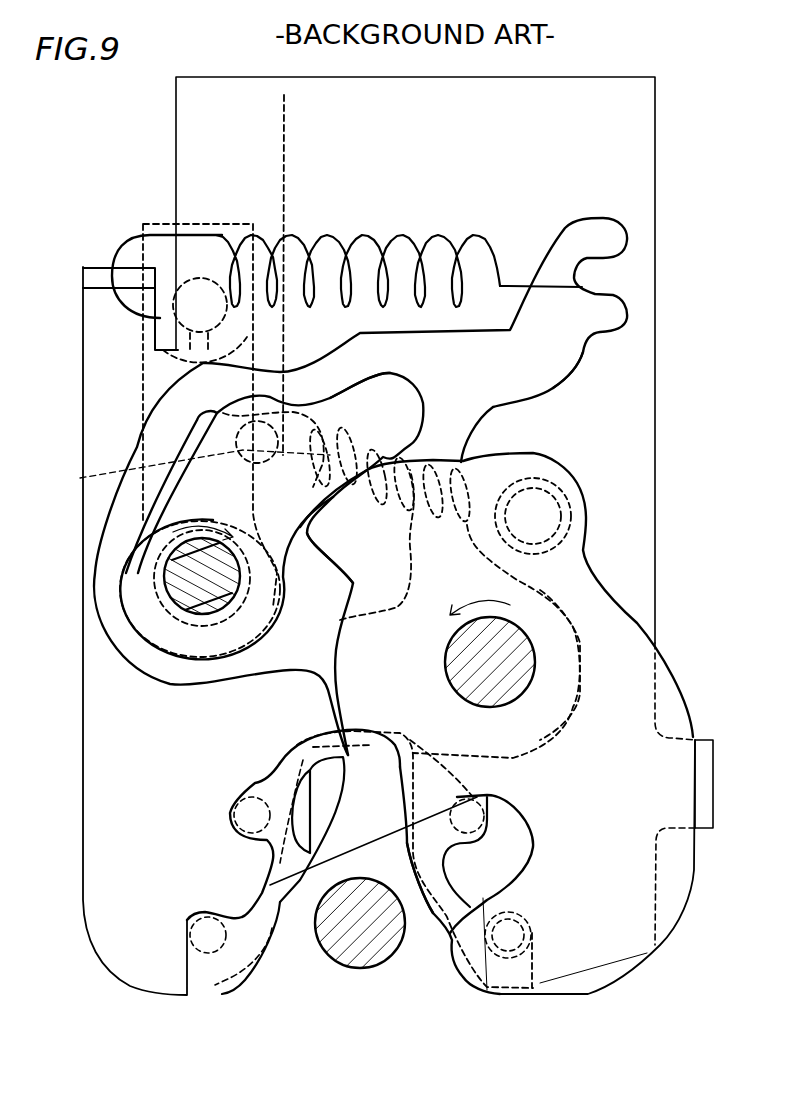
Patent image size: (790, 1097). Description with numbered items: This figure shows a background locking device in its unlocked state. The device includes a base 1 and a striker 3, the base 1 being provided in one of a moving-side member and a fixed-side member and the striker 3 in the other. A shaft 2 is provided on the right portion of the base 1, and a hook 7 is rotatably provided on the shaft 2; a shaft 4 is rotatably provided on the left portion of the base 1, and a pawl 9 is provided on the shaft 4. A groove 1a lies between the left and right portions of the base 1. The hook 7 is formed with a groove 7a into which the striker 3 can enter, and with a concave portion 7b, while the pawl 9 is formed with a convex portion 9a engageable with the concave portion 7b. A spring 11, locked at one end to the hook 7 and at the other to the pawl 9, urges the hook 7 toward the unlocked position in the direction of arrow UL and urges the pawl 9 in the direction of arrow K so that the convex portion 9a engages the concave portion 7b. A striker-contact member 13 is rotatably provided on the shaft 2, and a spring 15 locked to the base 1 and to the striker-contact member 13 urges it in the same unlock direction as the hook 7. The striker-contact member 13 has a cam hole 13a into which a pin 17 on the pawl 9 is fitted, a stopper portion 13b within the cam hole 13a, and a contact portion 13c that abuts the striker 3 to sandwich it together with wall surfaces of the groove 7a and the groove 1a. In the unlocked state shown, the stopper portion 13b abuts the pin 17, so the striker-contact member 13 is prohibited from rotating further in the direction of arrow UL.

The base 1 is at (549, 100).
The groove 1a is at (430, 933).
The shaft 2 is at (527, 660).
The striker 3 is at (357, 943).
The shaft 4 is at (175, 593).
The hook 7 is at (635, 663).
The groove 7a is at (487, 990).
The concave portion 7b is at (353, 582).
The pawl 9 is at (173, 520).
The convex portion 9a is at (380, 460).
The spring 11 is at (497, 470).
The striker-contact member 13 is at (578, 342).
The cam hole 13a is at (427, 410).
The stopper portion 13b is at (284, 95).
The contact portion 13c is at (325, 688).
The spring 15 is at (372, 235).
The pin 17 is at (190, 469).